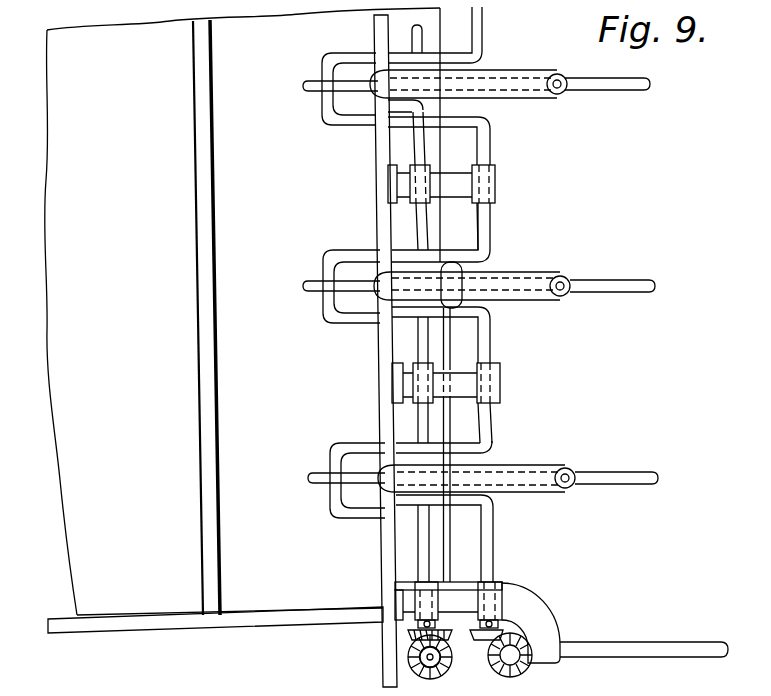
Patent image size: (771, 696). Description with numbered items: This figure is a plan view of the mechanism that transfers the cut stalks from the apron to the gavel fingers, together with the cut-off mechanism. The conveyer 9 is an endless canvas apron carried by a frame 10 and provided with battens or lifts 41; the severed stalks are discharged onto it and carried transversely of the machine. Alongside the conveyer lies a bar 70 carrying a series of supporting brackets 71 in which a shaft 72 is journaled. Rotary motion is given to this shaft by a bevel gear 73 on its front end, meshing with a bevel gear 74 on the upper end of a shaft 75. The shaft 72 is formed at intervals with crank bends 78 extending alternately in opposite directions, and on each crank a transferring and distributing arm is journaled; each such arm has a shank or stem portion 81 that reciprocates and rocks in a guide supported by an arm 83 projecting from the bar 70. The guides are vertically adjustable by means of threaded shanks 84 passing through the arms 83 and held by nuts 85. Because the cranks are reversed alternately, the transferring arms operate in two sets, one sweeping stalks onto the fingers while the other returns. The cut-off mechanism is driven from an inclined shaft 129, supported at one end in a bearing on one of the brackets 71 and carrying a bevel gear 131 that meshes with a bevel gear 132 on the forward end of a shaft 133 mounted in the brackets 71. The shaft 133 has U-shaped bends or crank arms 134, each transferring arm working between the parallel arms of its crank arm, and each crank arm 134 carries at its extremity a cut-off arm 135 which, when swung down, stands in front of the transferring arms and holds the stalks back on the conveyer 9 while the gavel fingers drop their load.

The conveyer 9 is at (68, 507).
The frame 10 is at (181, 631).
The battens or lifts 41 is at (218, 430).
The bar 70 is at (385, 345).
The supporting brackets 71 is at (495, 183).
The shaft 72 is at (420, 147).
The bevel gear 73 is at (447, 640).
The bevel gear 74 is at (426, 672).
The shaft 75 is at (436, 660).
The crank bends 78 is at (398, 107).
The shank or stem portion 81 is at (640, 90).
The arm 83 is at (508, 70).
The threaded shanks 84 is at (554, 92).
The nuts 85 is at (558, 75).
The shaft 129 is at (645, 642).
The bevel gear 131 is at (520, 644).
The bevel gear 132 is at (518, 641).
The shaft 133 is at (482, 148).
The U-shaped bends or crank arms 134 is at (321, 113).
The cut-off arm 135 is at (302, 85).